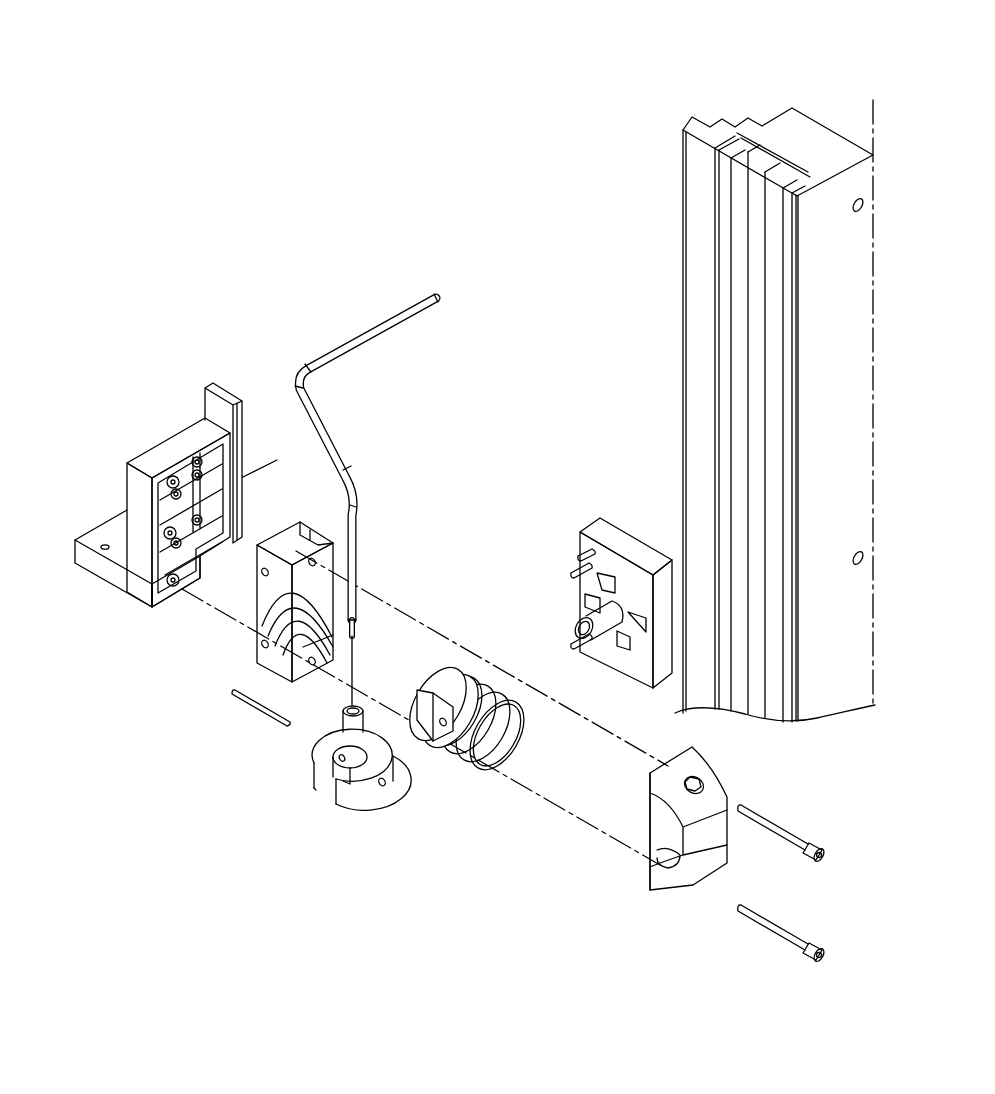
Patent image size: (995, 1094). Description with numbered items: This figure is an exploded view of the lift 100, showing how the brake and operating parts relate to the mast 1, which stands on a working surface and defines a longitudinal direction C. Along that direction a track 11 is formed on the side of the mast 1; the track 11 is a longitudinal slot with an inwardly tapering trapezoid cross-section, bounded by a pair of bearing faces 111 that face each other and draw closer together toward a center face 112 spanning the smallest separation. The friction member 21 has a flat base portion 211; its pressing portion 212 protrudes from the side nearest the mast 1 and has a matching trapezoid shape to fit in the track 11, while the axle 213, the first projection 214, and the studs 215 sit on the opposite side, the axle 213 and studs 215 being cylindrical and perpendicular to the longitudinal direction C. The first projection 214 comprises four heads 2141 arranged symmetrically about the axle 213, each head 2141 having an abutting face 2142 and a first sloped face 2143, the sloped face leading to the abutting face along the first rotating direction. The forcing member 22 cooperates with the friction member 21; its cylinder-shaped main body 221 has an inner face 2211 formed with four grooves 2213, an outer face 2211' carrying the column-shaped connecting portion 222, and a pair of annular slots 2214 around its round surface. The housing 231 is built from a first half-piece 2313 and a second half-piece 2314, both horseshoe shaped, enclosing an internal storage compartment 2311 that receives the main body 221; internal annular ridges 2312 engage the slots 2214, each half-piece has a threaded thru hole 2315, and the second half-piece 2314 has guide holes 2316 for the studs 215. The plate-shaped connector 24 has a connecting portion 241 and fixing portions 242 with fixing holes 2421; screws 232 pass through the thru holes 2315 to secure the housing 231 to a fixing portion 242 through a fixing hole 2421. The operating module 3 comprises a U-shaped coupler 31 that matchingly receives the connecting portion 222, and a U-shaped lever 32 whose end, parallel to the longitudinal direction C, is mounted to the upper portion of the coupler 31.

The lift 100 is at (402, 53).
The mast 1 is at (664, 241).
The track 11 is at (787, 64).
The bearing face 111 is at (737, 145).
The center face 112 is at (757, 145).
The longitudinal direction C is at (873, 100).
The friction member 21 is at (496, 502).
The base portion 211 is at (635, 547).
The pressing portion 212 is at (660, 553).
The axle 213 is at (603, 573).
The first projection 214 is at (608, 600).
The head 2141 is at (505, 537).
The abutting face 2142 is at (580, 608).
The first sloped face 2143 is at (572, 567).
The stud 215 is at (578, 562).
The forcing member 22 is at (510, 794).
The main body 221 is at (483, 703).
The inner face 2211 is at (488, 692).
The outer face 2211' is at (407, 695).
The groove 2213 is at (513, 692).
The annular slot 2214 is at (487, 707).
The connecting portion 222 is at (423, 740).
The housing 231 is at (170, 650).
The internal storage compartment 2311 is at (318, 602).
The internal annular ridge 2312 is at (300, 585).
The first half-piece 2313 is at (665, 887).
The second half-piece 2314 is at (258, 654).
The threaded thru hole 2315 is at (311, 560).
The guide hole 2316 is at (263, 575).
The screw 232 is at (773, 827).
The connector 24 is at (130, 322).
The connecting portion 241 is at (277, 467).
The fixing portion 242 is at (182, 443).
The fixing hole 2421 is at (170, 482).
The operating module 3 is at (430, 435).
The coupler 31 is at (327, 767).
The lever 32 is at (343, 445).